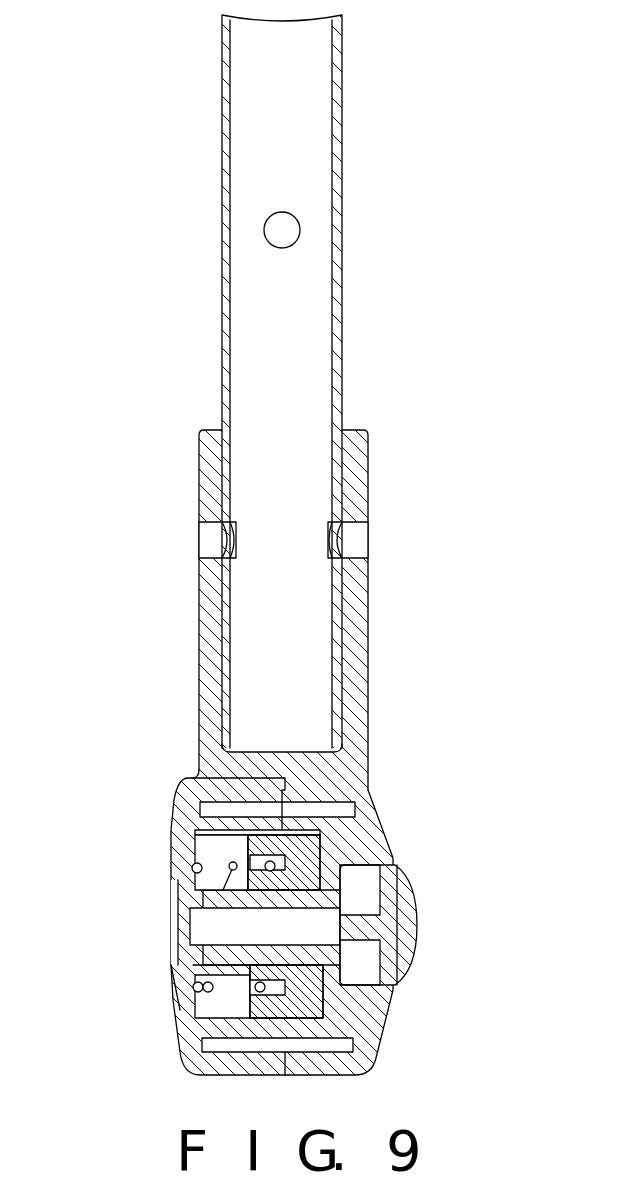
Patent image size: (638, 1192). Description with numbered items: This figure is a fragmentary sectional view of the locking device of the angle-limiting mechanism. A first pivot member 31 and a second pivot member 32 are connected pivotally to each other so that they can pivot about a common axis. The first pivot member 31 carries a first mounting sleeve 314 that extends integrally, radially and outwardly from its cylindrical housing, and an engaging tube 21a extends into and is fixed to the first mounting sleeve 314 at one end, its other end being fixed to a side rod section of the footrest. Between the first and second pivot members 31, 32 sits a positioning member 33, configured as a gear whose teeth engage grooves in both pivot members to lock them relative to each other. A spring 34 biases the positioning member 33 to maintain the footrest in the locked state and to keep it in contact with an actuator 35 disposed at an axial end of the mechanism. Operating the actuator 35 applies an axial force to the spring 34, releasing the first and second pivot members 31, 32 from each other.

The engaging tube 21a is at (305, 338).
The first mounting sleeve 314 is at (352, 652).
The first pivot member 31 is at (360, 848).
The second pivot member 32 is at (202, 790).
The positioning member 33 is at (293, 1003).
The spring 34 is at (233, 865).
The actuator 35 is at (405, 930).